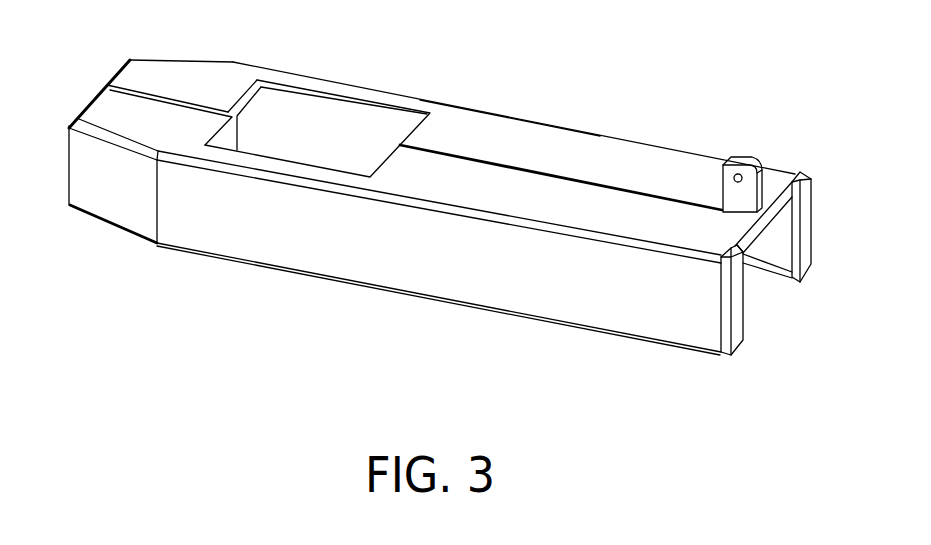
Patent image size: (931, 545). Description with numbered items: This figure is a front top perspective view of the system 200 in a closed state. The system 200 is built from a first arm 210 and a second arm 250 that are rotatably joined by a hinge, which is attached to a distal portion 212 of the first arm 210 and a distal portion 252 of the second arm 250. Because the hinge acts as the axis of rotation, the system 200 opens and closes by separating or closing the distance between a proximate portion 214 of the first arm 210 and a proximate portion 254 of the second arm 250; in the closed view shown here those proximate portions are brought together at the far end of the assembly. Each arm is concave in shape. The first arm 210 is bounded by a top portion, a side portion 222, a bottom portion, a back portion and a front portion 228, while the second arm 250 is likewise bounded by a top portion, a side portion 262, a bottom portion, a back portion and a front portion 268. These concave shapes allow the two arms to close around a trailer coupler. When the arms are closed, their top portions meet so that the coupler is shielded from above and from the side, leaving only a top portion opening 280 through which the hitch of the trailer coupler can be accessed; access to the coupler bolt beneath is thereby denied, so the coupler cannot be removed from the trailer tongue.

The system 200 is at (159, 324).
The first arm 210 is at (554, 207).
The distal portion of the first arm 212 is at (105, 104).
The proximate portion of the first arm 214 is at (716, 315).
The side portion of the first arm 222 is at (359, 258).
The front portion of the first arm 228 is at (739, 303).
The second arm 250 is at (584, 160).
The distal portion of the second arm 252 is at (142, 65).
The proximate portion of the second arm 254 is at (814, 190).
The side portion of the second arm 262 is at (517, 109).
The front portion of the second arm 268 is at (812, 230).
The top portion opening 280 is at (328, 114).